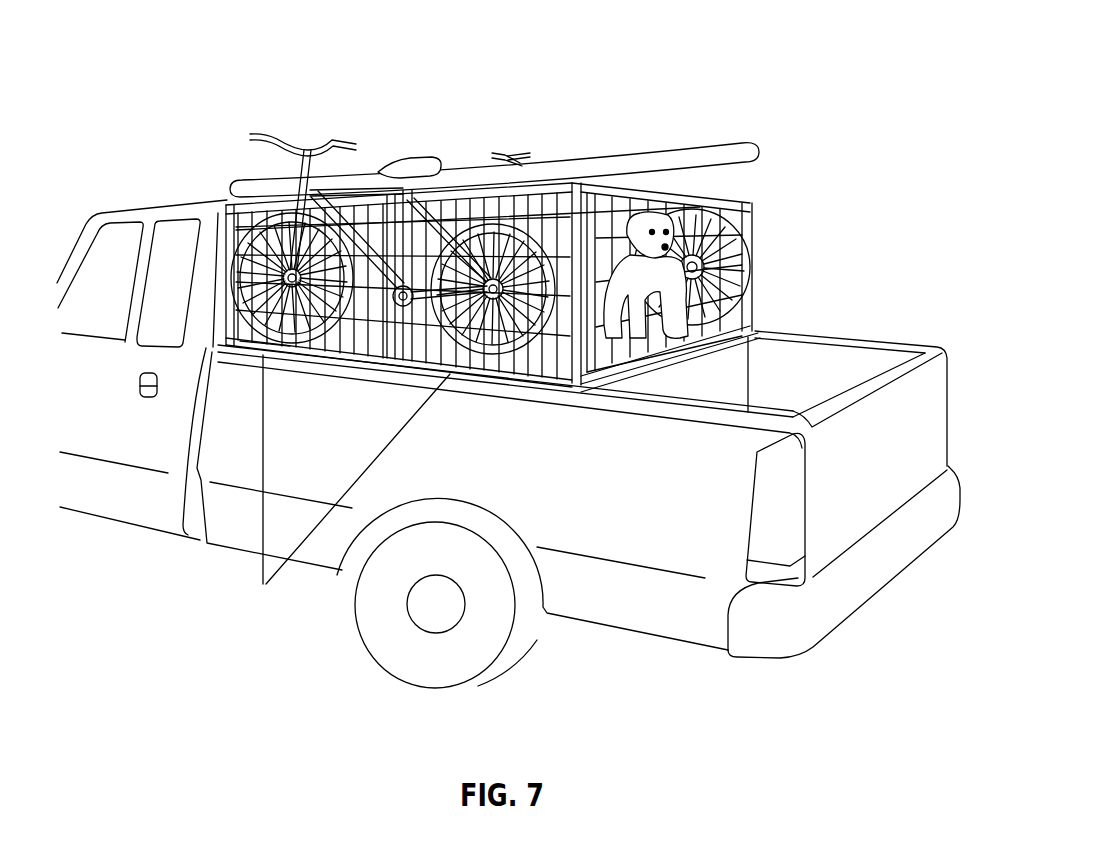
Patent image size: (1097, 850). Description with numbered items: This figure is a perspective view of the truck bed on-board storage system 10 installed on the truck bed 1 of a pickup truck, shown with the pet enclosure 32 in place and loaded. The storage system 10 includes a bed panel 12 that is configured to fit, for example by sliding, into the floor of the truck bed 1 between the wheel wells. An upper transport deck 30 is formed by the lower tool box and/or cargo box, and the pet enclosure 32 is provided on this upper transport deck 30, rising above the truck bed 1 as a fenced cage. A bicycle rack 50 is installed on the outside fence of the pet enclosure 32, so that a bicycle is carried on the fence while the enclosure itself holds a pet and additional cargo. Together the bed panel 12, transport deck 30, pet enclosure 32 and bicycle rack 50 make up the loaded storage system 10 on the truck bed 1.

The truck bed 1 is at (956, 365).
The truck bed on-board storage system 10 is at (796, 152).
The bed panel 12 is at (866, 370).
The upper transport deck 30 is at (755, 331).
The pet enclosure 32 is at (752, 247).
The bicycle rack 50 is at (345, 479).